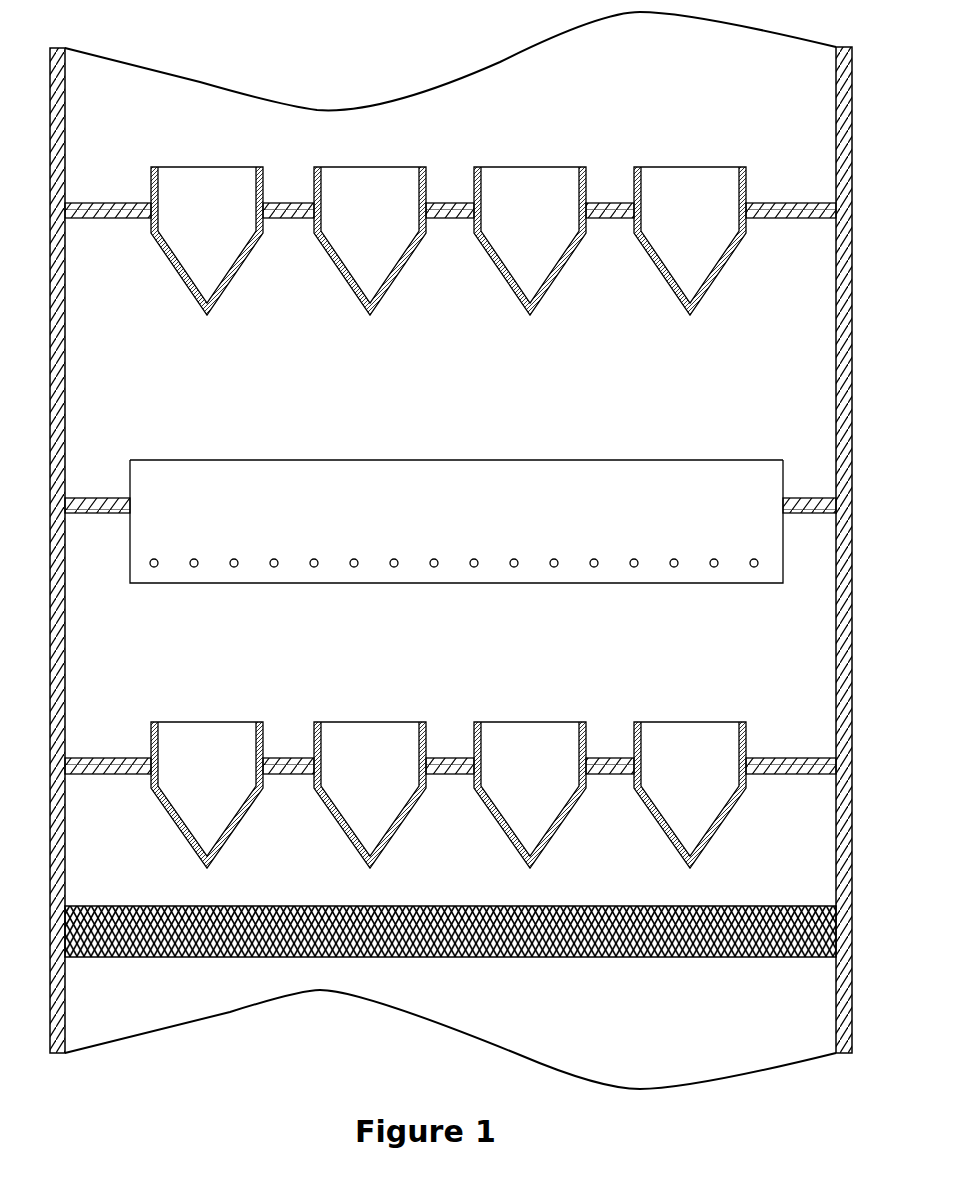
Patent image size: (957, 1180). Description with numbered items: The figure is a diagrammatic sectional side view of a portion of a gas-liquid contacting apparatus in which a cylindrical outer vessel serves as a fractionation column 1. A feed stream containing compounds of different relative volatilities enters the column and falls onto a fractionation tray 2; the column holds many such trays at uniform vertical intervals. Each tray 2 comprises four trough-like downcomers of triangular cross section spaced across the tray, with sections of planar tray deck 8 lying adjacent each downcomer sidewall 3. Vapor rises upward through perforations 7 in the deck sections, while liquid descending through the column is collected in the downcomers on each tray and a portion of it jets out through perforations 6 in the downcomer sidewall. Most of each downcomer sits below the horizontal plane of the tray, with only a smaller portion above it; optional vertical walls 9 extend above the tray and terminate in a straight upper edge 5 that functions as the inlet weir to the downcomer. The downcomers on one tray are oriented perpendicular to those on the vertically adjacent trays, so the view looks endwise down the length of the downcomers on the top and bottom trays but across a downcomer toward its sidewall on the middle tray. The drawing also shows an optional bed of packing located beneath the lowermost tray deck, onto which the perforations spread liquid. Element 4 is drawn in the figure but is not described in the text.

The fractionation column 1 is at (850, 243).
The fractionation tray 2 is at (85, 203).
The downcomer sidewall 3 is at (352, 290).
The hopper chamber 4 is at (670, 183).
The upper edge 5 is at (416, 167).
The perforations 6 is at (180, 275).
The perforations 7 is at (273, 203).
The planar tray deck 8 is at (820, 498).
The vertical walls 9 is at (474, 192).